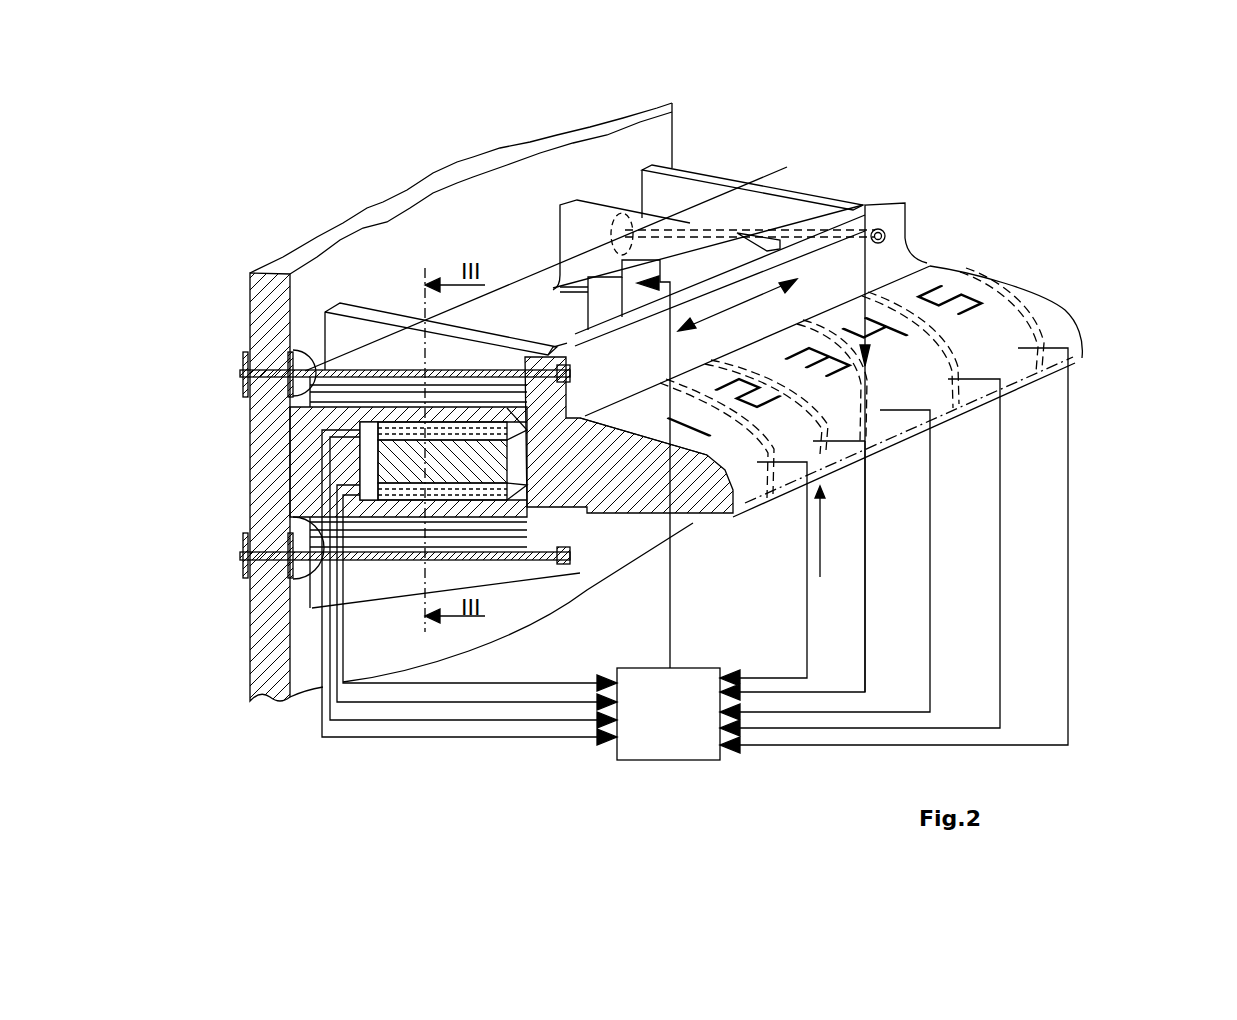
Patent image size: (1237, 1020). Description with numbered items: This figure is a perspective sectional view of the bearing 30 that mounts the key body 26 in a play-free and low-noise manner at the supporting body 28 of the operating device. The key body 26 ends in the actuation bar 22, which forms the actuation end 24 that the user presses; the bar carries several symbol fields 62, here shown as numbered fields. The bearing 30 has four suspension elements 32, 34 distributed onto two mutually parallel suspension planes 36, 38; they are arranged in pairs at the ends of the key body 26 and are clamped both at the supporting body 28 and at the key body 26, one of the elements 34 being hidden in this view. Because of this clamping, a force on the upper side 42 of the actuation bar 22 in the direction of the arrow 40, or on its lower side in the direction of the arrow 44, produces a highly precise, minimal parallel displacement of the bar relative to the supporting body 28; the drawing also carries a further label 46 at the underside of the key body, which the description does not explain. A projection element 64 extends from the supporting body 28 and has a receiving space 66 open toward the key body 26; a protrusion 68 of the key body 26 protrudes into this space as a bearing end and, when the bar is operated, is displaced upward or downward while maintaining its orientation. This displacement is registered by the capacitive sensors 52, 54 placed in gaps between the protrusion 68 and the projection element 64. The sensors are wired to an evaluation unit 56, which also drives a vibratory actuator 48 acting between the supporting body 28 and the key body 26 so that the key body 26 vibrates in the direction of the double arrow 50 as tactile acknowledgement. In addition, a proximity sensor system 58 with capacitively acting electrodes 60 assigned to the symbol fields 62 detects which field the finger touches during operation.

The actuation bar 22 is at (1120, 332).
The actuation end 24 is at (1108, 282).
The key body 26 is at (893, 262).
The supporting body 28 is at (477, 226).
The bearing 30 is at (470, 222).
The suspension element 32 is at (773, 232).
The suspension element 34 is at (383, 592).
The suspension plane 36 is at (773, 212).
The suspension plane 38 is at (957, 262).
The arrow 40 is at (850, 260).
The upper side 42 is at (1032, 288).
The arrow 44 is at (820, 555).
The carriage flange 46 is at (688, 537).
The vibratory actuator 48 is at (618, 285).
The double arrow 50 is at (775, 250).
The sensor 52 is at (372, 452).
The sensor 54 is at (380, 479).
The evaluation unit 56 is at (665, 760).
The proximity sensor system 58 is at (990, 422).
The electrodes 60 is at (772, 500).
The symbol fields 62 is at (1020, 363).
The projection element 64 is at (412, 410).
The receiving space 66 is at (612, 584).
The protrusion 68 is at (412, 467).